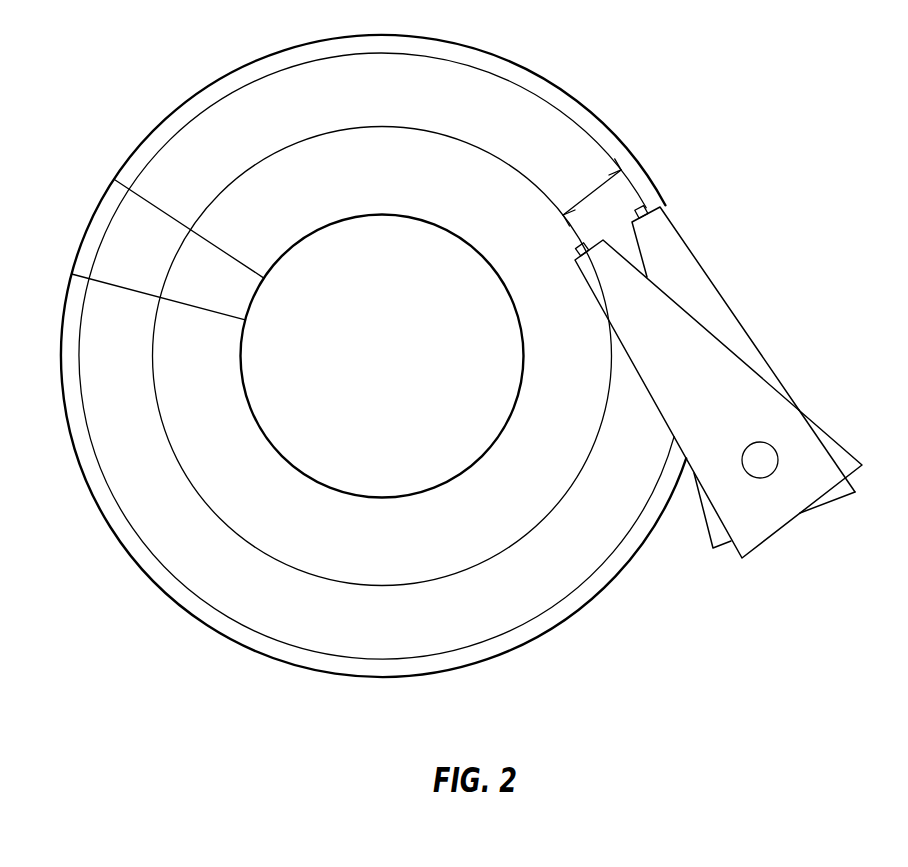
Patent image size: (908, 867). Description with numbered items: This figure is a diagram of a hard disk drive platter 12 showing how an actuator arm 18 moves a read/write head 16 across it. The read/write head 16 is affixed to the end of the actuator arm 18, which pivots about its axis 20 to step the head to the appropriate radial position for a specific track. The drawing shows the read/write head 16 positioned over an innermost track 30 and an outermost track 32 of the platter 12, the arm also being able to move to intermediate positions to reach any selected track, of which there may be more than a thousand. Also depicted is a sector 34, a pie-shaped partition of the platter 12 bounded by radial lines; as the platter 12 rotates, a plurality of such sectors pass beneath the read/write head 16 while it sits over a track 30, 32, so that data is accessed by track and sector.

The platter 12 is at (620, 573).
The read/write head 16 is at (580, 249).
The actuator arm 18 is at (680, 353).
The axis 20 is at (757, 462).
The innermost track 30 is at (310, 138).
The outermost track 32 is at (280, 72).
The sector 34 is at (129, 256).